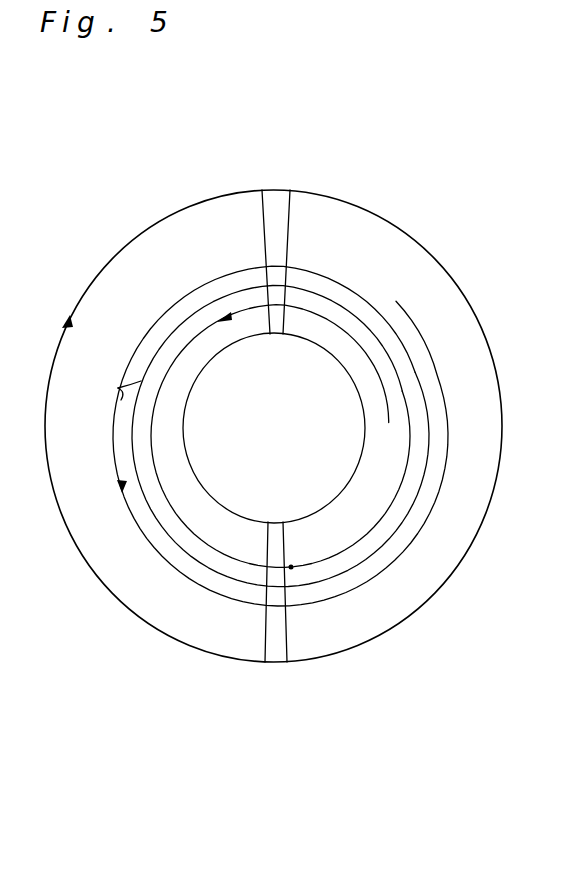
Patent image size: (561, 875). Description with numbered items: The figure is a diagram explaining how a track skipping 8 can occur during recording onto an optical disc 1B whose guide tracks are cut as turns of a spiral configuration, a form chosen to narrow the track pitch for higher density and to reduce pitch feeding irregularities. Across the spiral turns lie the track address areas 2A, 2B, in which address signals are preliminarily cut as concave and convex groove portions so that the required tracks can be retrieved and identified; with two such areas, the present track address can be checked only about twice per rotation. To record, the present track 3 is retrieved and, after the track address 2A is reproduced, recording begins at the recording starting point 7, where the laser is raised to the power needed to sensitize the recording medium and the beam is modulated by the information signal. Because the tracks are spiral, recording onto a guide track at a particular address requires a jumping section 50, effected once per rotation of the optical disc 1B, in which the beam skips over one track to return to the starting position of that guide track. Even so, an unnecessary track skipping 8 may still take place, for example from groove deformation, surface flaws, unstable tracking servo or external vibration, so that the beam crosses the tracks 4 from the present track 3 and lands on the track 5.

The optical disc 1B is at (409, 237).
The track address area 2A is at (277, 190).
The track address area 2B is at (274, 663).
The present track 3 is at (176, 361).
The tracks 4 is at (170, 338).
The track 5 is at (202, 288).
The recording starting point 7 is at (293, 567).
The track skipping 8 is at (118, 388).
The jumping section 50 is at (302, 300).